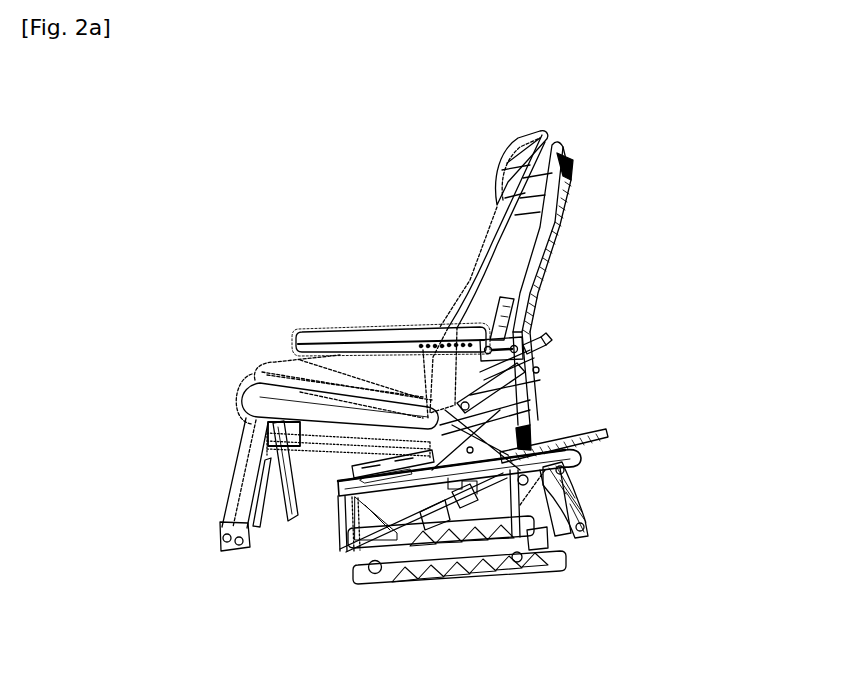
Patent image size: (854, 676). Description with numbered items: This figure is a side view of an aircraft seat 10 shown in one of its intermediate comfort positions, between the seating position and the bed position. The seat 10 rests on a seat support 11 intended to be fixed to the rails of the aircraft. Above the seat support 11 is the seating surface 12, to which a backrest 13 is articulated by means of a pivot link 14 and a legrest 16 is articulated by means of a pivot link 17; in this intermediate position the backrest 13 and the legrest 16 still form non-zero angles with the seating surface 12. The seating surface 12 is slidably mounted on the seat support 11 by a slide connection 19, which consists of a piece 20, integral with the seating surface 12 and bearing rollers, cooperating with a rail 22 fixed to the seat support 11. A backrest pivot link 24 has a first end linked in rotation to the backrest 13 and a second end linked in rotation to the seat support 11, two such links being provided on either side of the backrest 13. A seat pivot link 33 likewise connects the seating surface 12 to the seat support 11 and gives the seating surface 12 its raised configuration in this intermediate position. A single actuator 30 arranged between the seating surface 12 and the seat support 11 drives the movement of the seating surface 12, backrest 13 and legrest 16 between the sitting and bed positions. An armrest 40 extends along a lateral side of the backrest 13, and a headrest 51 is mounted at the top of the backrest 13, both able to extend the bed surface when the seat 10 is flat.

The seat 10 is at (216, 177).
The seat support 11 is at (574, 548).
The seating surface 12 is at (280, 382).
The backrest 13 is at (525, 242).
The pivot link 14 is at (418, 327).
The legrest 16 is at (237, 508).
The pivot link 17 is at (262, 398).
The slide connection 19 is at (550, 426).
The piece 20 is at (543, 405).
The rail 22 is at (572, 481).
The backrest pivot link 24 is at (580, 510).
The single actuator 30 is at (608, 443).
The seat pivot link 33 is at (345, 395).
The armrest 40 is at (383, 326).
The headrest 51 is at (523, 146).